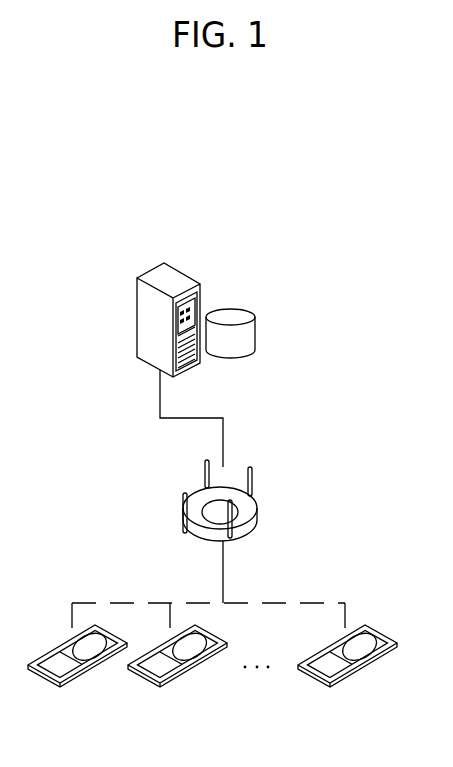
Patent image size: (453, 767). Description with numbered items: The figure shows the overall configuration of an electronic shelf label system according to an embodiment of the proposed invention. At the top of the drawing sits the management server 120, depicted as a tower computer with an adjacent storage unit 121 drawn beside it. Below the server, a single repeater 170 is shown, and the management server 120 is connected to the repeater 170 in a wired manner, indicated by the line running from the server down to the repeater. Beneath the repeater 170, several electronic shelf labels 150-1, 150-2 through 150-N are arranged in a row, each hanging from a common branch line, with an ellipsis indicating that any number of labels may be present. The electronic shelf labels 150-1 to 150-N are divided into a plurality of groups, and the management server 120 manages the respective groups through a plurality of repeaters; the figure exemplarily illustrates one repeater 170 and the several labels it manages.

The management server 120 is at (185, 274).
The database 121 is at (230, 311).
The repeater 170 is at (258, 505).
The electronic shelf label 150-1 is at (77, 675).
The electronic shelf label 150-2 is at (177, 675).
The electronic shelf label 150-N is at (347, 675).